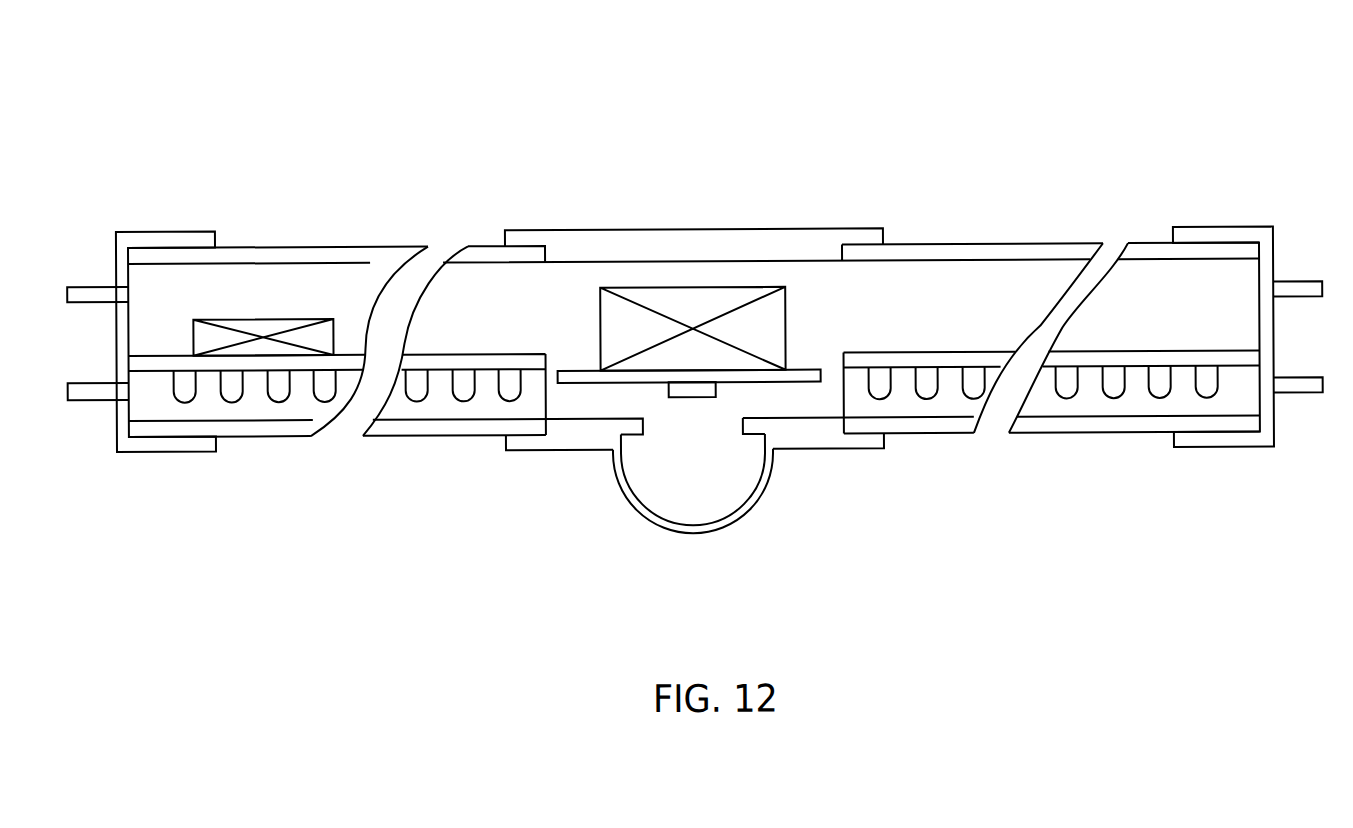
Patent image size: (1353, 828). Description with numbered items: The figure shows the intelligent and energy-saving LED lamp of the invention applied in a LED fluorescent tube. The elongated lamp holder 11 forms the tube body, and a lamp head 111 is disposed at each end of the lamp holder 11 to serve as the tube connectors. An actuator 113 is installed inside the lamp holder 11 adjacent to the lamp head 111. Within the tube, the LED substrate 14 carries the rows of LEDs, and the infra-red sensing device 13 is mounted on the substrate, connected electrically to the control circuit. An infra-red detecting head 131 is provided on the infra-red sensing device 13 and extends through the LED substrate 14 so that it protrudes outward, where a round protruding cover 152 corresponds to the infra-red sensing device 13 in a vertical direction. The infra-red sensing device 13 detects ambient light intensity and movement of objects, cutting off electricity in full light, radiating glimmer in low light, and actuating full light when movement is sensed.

The lamp holder 11 is at (367, 264).
The lamp head 111 is at (182, 247).
The actuator 113 is at (262, 339).
The infra-red sensing device 13 is at (653, 315).
The infra-red detecting head 131 is at (684, 401).
The LED substrate 14 is at (802, 455).
The protruding cover 152 is at (681, 530).